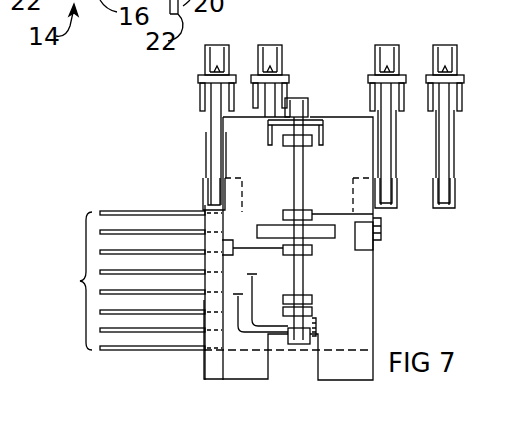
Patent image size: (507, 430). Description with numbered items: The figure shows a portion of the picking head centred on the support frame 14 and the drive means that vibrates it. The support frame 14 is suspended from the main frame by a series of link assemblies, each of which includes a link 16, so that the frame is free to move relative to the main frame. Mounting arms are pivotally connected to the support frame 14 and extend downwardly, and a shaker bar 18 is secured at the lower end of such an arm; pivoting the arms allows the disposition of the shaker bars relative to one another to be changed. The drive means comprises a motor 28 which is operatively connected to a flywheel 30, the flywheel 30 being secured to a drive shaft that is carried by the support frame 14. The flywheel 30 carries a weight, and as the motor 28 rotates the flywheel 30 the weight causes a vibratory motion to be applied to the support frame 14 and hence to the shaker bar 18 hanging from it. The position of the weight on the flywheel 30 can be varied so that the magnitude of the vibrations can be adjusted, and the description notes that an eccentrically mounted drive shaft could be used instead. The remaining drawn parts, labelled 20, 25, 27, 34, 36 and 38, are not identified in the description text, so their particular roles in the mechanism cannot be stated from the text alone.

The support frame 14 is at (131, 356).
The link 16 is at (137, 231).
The shaker bar 18 is at (72, 281).
The housing 20 is at (364, 304).
The sleeve 25 is at (203, 122).
The spindle assembly 27 is at (270, 45).
The motor 28 is at (300, 344).
The flywheel 30 is at (303, 168).
The collar 34 is at (312, 249).
The conduit 36 is at (252, 248).
The disc 38 is at (270, 225).